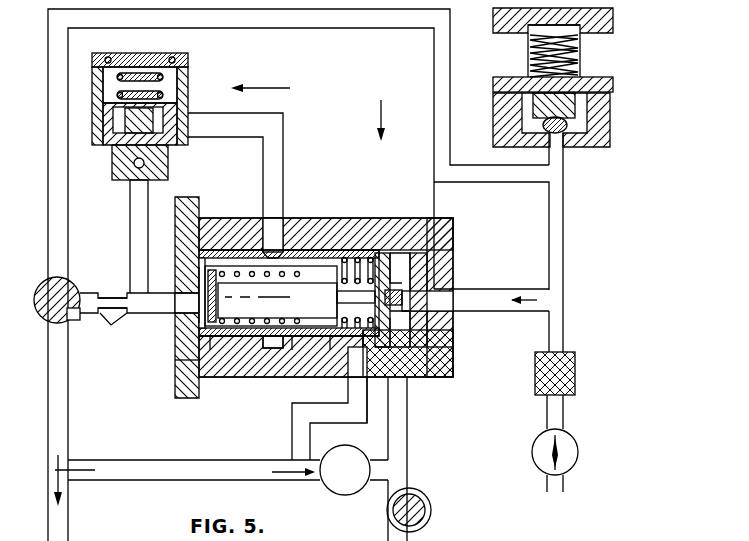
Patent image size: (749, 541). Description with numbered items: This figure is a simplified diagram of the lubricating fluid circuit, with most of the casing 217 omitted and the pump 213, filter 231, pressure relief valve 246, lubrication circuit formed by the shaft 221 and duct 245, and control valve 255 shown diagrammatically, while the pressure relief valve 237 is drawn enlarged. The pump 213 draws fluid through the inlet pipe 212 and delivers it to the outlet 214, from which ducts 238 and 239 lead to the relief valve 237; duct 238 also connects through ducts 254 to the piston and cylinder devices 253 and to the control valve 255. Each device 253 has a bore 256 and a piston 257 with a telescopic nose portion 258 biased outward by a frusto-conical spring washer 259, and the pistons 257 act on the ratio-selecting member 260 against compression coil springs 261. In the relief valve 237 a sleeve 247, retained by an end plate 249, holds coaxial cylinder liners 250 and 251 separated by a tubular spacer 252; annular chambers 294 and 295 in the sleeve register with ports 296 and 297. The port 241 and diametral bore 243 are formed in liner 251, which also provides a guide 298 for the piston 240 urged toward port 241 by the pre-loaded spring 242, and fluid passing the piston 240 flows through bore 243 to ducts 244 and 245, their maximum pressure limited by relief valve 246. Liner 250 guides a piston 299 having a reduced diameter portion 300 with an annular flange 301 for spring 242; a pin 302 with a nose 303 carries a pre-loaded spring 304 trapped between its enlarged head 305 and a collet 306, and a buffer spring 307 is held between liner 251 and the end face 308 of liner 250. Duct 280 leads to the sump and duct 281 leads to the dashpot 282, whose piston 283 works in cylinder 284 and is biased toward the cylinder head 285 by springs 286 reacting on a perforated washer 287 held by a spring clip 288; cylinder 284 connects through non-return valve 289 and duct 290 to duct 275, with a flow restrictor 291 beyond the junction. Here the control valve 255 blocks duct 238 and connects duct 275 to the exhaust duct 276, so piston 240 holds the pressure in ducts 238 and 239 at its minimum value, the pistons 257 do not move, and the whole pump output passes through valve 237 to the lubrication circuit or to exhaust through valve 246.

The inlet pipe 212 is at (546, 488).
The pump 213 is at (531, 453).
The outlet 214 is at (548, 422).
The casing 217 is at (189, 63).
The power input shaft 221 is at (426, 504).
The filter 231 is at (536, 394).
The pressure relief valve 237 is at (384, 109).
The duct 238 is at (309, 28).
The duct 239 is at (505, 293).
The piston 240 is at (433, 273).
The port 241 is at (422, 305).
The pre-loaded compression coil spring 242 is at (218, 217).
The diametral bore 243 is at (446, 229).
The duct 244 is at (400, 438).
The duct 245 is at (402, 488).
The pressure relief valve 246 is at (333, 483).
The sleeve 247 is at (435, 345).
The end plate 249 is at (178, 390).
The cylinder liner 250 is at (207, 216).
The cylinder liner 251 is at (440, 325).
The tubular spacer 252 is at (339, 250).
The fluid pressure operable piston and cylinder device 253 is at (491, 47).
The duct 254 is at (549, 155).
The control valve 255 is at (72, 328).
The bore 256 is at (562, 120).
The piston 257 is at (497, 102).
The telescopic nose portion 258 is at (585, 82).
The frusto-conical spring washer 259 is at (566, 150).
The ratio-selecting member 260 is at (523, 55).
The compression coil spring 261 is at (579, 51).
The duct 275 is at (88, 315).
The exhaust duct 276 is at (60, 395).
The duct 280 is at (297, 440).
The duct 281 is at (278, 153).
The dashpot 282 is at (260, 147).
The piston 283 is at (117, 150).
The cylinder 284 is at (185, 85).
The cylinder head 285 is at (172, 140).
The compression coil spring 286 is at (186, 95).
The perforated washer 287 is at (112, 57).
The spring clip 288 is at (183, 56).
The non-return valve 289 is at (128, 175).
The duct 290 is at (136, 218).
The flow restrictor 291 is at (112, 296).
The annular chamber 294 is at (270, 250).
The annular chamber 295 is at (371, 248).
The ports 296 is at (275, 345).
The ports 297 is at (383, 352).
The guide 298 is at (403, 335).
The piston 299 is at (290, 375).
The reduced diameter portion 300 is at (200, 327).
The annular flange 301 is at (220, 352).
The pin 302 is at (290, 296).
The nose 303 is at (442, 347).
The pre-loaded compression coil spring 304 is at (283, 250).
The enlarged head 305 is at (178, 318).
The collet 306 is at (393, 252).
The buffer spring 307 is at (330, 350).
The end face 308 is at (343, 250).